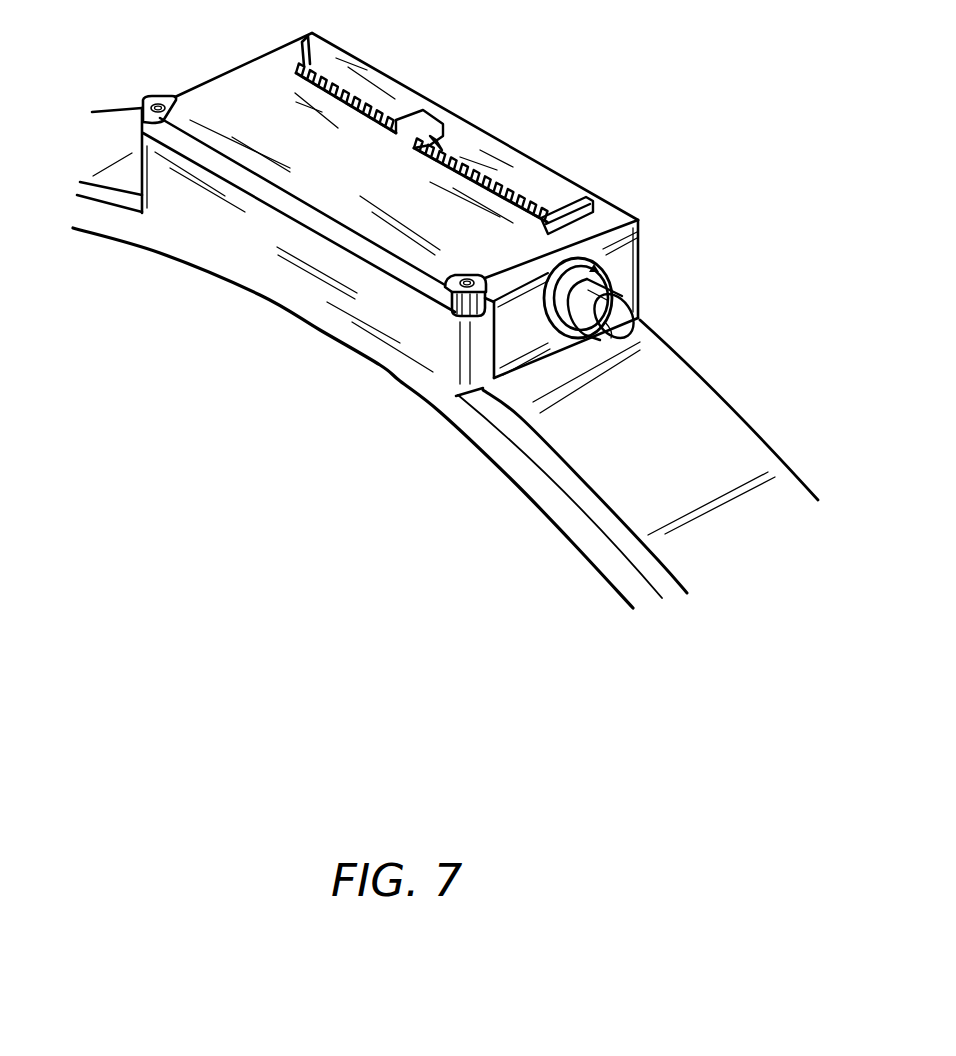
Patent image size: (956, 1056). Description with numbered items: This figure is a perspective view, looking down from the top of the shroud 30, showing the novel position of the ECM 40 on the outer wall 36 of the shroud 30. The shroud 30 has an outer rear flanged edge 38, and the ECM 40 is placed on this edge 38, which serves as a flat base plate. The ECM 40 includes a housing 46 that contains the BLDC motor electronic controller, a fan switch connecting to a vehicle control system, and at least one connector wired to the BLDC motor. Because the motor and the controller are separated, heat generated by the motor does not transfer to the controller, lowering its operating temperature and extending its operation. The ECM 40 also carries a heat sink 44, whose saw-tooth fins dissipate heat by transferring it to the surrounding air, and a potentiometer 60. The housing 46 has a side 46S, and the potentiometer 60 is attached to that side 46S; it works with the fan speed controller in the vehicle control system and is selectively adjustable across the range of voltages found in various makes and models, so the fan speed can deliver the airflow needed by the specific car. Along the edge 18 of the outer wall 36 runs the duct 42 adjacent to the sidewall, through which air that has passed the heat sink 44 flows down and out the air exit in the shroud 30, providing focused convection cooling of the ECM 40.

The edge of the outer wall 18 is at (498, 450).
The shroud 30 is at (520, 558).
The outer wall 36 is at (717, 423).
The outer rear flanged edge 38 is at (640, 310).
The ECM 40 is at (546, 90).
The duct 42 is at (254, 316).
The heat sink 44 is at (359, 97).
The housing 46 is at (572, 190).
The side of the housing 46S is at (636, 259).
The potentiometer 60 is at (635, 333).